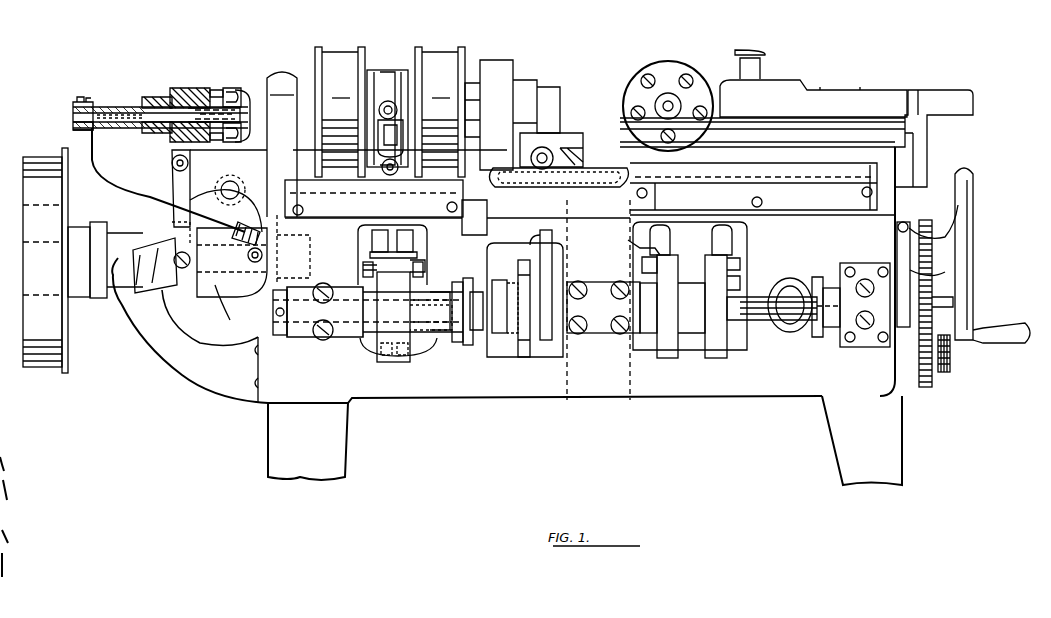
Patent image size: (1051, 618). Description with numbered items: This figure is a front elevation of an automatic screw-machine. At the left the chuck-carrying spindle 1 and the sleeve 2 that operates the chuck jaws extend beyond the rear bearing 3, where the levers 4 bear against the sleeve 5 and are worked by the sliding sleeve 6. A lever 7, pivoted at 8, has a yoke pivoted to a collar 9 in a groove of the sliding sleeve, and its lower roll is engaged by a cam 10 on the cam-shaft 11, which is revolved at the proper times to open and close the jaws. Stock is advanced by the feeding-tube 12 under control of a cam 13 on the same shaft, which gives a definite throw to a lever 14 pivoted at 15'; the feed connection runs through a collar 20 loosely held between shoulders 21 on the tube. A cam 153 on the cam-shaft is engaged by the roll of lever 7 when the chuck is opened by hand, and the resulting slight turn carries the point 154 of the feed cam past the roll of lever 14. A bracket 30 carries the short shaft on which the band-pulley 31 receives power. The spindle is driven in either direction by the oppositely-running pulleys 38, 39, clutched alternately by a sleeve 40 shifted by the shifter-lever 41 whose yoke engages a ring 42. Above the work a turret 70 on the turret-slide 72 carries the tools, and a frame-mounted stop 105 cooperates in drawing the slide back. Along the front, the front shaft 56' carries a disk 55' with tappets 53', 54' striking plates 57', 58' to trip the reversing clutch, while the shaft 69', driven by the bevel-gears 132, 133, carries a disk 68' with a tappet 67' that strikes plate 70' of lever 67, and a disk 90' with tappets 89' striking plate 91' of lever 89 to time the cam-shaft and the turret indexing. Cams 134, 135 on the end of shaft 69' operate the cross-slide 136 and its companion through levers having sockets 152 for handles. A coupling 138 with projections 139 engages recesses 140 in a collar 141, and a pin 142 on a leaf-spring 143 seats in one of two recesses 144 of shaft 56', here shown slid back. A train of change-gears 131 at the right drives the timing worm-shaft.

The chuck-carrying spindle 1 is at (140, 105).
The sleeve 2 is at (247, 116).
The rear bearing 3 is at (282, 70).
The levers 4 is at (235, 88).
The sleeve 5 is at (218, 90).
The sliding sleeve 6 is at (208, 100).
The lever 7 is at (173, 183).
The pivot 8 is at (171, 164).
The collar 9 is at (185, 88).
The cam 10 is at (181, 233).
The cam-shaft 11 is at (320, 250).
The feeding-tube 12 is at (112, 107).
The cam 13 is at (233, 232).
The lever 14 is at (228, 195).
The pivot 15' is at (236, 187).
The collar 20 is at (83, 133).
The shoulders 21 is at (78, 100).
The bracket 30 is at (451, 352).
The band-pulley 31 is at (52, 368).
The pulley 38 is at (435, 60).
The pulley 39 is at (338, 60).
The sleeve 40 is at (400, 70).
The shifter-lever 41 is at (380, 145).
The ring 42 is at (388, 70).
The tappet 53' is at (352, 262).
The tappet 54' is at (433, 264).
The disk 55' is at (366, 320).
The shaft 56' is at (368, 320).
The plate 57' is at (378, 255).
The plate 58' is at (427, 242).
The lever 67 is at (690, 286).
The tappet 67' is at (629, 261).
The disk 68' is at (660, 313).
The shaft 69' is at (772, 290).
The turret 70 is at (668, 92).
The plate 70' is at (613, 300).
The turret-slide 72 is at (848, 95).
The lever 89 is at (712, 240).
The tappets 89' is at (753, 266).
The disk 90' is at (715, 318).
The plate 91' is at (755, 247).
The stop 105 is at (925, 120).
The change-gears 131 is at (928, 222).
The bevel-gear 132 is at (795, 285).
The bevel-gear 133 is at (815, 335).
The cam 134 is at (552, 340).
The cam 135 is at (548, 345).
The cross-slide 136 is at (568, 142).
The coupling 138 is at (458, 342).
The projections 139 is at (468, 278).
The recesses 140 is at (498, 280).
The collar 141 is at (505, 370).
The pin 142 is at (440, 305).
The leaf-spring 143 is at (455, 290).
The recesses 144 is at (425, 305).
The sockets 152 is at (500, 178).
The cam 153 is at (160, 270).
The point 154 is at (248, 258).